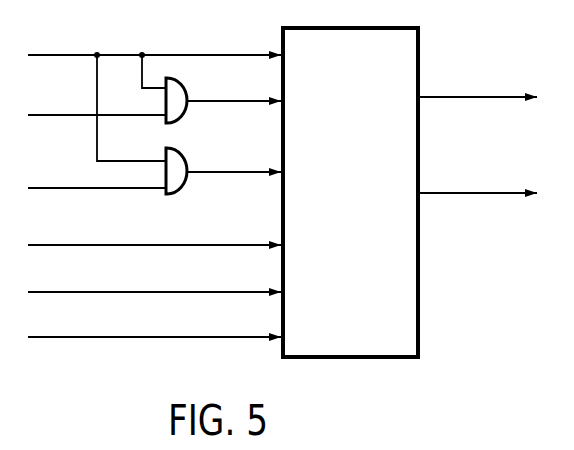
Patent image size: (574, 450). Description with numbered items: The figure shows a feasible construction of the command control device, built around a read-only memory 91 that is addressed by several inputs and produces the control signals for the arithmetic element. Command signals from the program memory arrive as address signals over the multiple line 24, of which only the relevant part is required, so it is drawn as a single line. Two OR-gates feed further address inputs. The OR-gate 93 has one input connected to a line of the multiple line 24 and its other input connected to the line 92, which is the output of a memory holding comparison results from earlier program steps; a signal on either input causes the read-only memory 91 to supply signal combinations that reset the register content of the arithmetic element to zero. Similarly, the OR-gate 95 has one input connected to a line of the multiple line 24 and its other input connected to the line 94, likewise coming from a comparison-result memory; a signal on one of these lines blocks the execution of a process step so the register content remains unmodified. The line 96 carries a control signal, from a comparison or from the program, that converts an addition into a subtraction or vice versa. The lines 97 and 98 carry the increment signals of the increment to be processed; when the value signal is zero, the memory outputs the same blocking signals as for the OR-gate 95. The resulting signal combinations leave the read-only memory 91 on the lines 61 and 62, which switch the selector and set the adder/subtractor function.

The multiple line 24 is at (197, 52).
The read-only memory 91 is at (420, 43).
The line 92 is at (58, 116).
The OR-gate 93 is at (185, 89).
The line 94 is at (60, 189).
The OR-gate 95 is at (181, 153).
The line 96 is at (105, 246).
The line 97 is at (97, 293).
The line 98 is at (97, 338).
The line 61 is at (472, 96).
The multiple line 62 is at (474, 192).